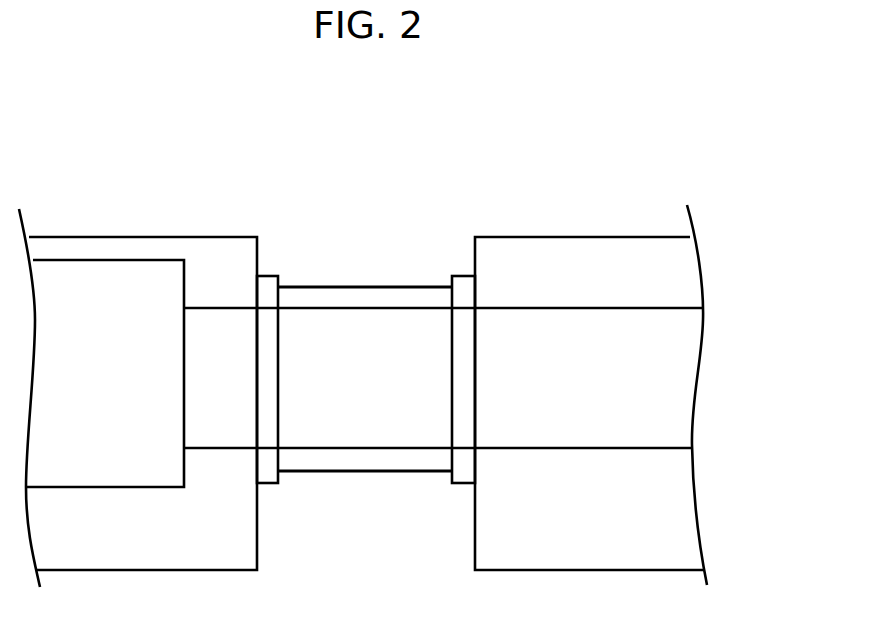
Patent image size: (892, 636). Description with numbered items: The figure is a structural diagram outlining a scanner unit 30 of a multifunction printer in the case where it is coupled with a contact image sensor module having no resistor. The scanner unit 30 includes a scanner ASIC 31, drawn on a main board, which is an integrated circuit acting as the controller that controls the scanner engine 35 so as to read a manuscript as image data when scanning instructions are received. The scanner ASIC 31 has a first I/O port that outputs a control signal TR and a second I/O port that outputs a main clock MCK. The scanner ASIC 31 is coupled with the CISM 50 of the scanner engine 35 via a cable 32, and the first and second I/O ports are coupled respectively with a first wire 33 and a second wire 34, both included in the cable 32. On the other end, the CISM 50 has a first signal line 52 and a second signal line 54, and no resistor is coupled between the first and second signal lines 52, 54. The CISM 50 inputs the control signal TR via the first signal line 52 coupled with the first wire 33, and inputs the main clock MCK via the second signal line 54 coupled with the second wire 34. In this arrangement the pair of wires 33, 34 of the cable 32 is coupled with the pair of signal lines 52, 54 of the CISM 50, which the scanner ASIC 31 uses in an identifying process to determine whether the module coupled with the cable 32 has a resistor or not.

The scanner unit 30 is at (383, 145).
The scanner ASIC 31 is at (85, 259).
The cable 32 is at (318, 286).
The first wire 33 is at (363, 309).
The second wire 34 is at (415, 447).
The scanner engine 35 is at (651, 166).
The CISM 50 is at (567, 237).
The first signal line 52 is at (612, 308).
The second signal line 54 is at (662, 447).